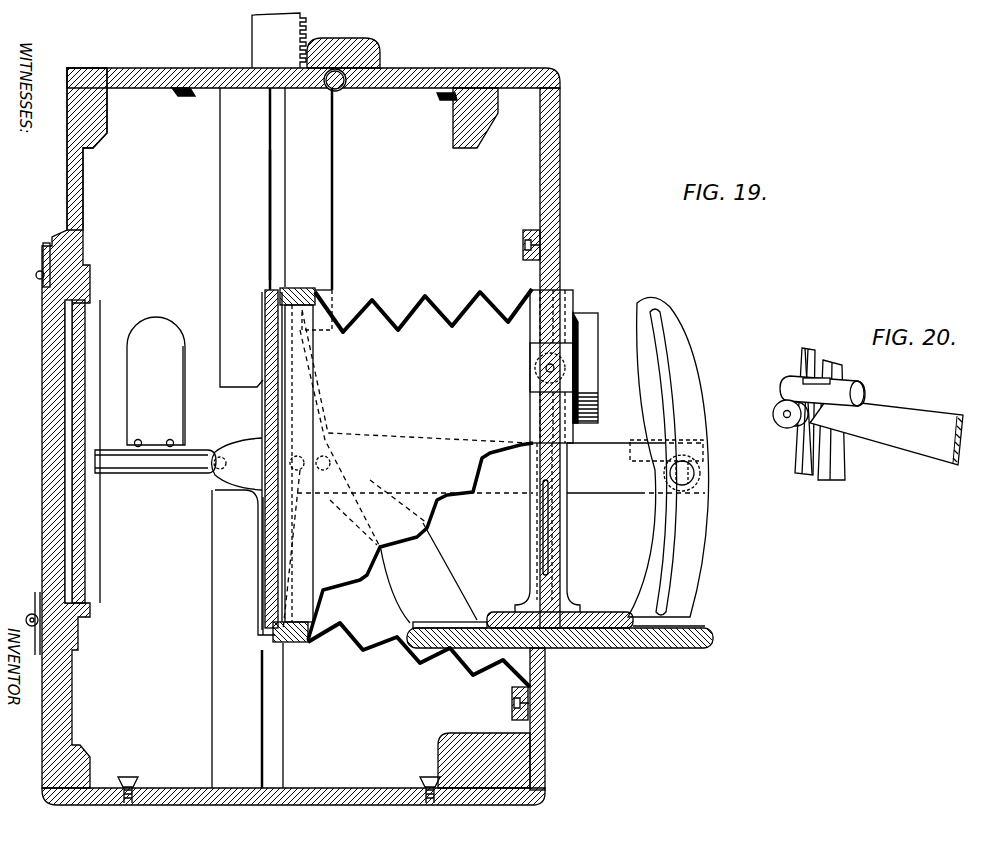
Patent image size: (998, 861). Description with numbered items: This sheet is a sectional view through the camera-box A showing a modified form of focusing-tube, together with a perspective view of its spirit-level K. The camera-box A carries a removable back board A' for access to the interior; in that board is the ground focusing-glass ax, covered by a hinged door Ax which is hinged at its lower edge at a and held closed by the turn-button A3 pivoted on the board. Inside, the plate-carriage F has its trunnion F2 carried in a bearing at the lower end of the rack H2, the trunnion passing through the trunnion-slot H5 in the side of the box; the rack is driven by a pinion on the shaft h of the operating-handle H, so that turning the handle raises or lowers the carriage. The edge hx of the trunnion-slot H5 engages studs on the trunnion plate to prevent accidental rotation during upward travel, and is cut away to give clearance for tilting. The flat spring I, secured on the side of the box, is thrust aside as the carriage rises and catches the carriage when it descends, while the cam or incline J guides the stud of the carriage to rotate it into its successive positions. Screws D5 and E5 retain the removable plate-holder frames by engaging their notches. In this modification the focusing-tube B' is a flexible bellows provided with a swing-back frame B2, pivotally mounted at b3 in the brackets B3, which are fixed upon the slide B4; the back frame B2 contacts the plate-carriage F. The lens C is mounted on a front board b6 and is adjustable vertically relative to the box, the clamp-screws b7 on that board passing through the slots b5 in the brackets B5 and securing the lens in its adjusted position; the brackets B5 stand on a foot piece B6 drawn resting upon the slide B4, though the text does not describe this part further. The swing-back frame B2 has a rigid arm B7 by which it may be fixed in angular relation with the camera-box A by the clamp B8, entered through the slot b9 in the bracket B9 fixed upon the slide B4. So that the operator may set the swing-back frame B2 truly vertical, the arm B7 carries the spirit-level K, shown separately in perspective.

In FIG. 19, the camera-box A is at (322, 436).
In FIG. 19, the removable back board A' is at (67, 149).
In FIG. 19, the turn-button A3 is at (44, 268).
In FIG. 19, the hinged door Ax is at (50, 463).
In FIG. 19, the ground focusing-glass ax is at (88, 572).
In FIG. 19, the hinge of door a is at (30, 618).
In FIG. 19, the flat spring I is at (156, 382).
In FIG. 19, the plate-carriage F is at (267, 412).
In FIG. 19, the trunnion F2 is at (178, 464).
In FIG. 19, the cam or incline J is at (232, 497).
In FIG. 19, the rack H2 is at (263, 56).
In FIG. 19, the screws D5 is at (187, 97).
In FIG. 19, the shaft h is at (343, 88).
In FIG. 19, the edge of trunnion-slot hx is at (272, 212).
In FIG. 19, the operating-handle H is at (278, 258).
In FIG. 19, the trunnion-slot H5 is at (270, 755).
In FIG. 19, the screws E5 is at (131, 777).
In FIG. 19, the swing-back frame B2 is at (310, 377).
In FIG. 19, the focusing-tube B' is at (420, 488).
In FIG. 19, the pivot b3 is at (320, 438).
In FIG. 19, the brackets B3 is at (440, 562).
In FIG. 19, the front board b6 is at (560, 303).
In FIG. 19, the clamp-screws b7 is at (547, 369).
In FIG. 19, the lens C is at (590, 358).
In FIG. 19, the brackets B5 is at (568, 540).
In FIG. 19, the slots b5 is at (541, 572).
In FIG. 19, the foot pad B6 is at (602, 614).
In FIG. 19, the slide B4 is at (637, 649).
In FIG. 19, the rigid arm B7 is at (636, 468).
In FIG. 20, the rigid arm B7 is at (886, 432).
In FIG. 19, the spirit-level K is at (648, 441).
In FIG. 20, the spirit-level K is at (845, 392).
In FIG. 19, the bracket B9 is at (688, 575).
In FIG. 20, the bracket B9 is at (848, 478).
In FIG. 19, the slot b9 is at (677, 533).
In FIG. 20, the slot b9 is at (818, 482).
In FIG. 19, the clamp B8 is at (695, 473).
In FIG. 20, the clamp B8 is at (784, 417).